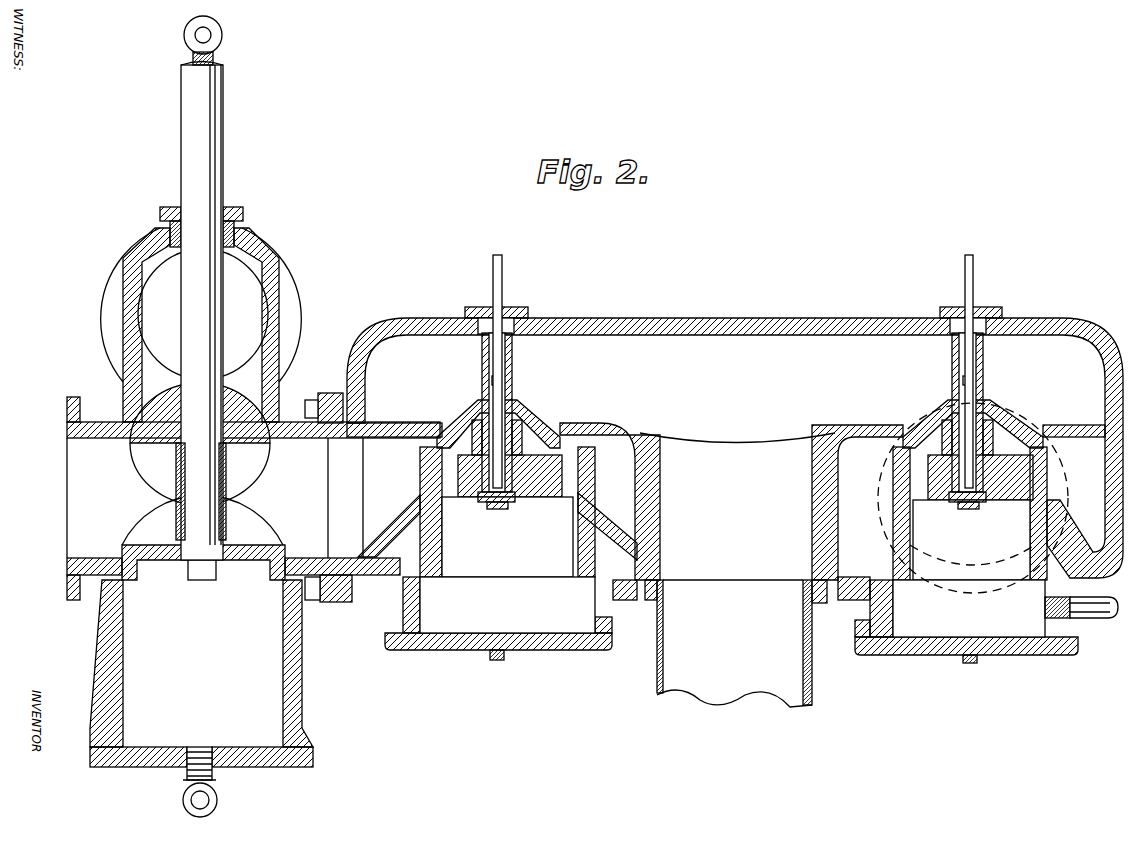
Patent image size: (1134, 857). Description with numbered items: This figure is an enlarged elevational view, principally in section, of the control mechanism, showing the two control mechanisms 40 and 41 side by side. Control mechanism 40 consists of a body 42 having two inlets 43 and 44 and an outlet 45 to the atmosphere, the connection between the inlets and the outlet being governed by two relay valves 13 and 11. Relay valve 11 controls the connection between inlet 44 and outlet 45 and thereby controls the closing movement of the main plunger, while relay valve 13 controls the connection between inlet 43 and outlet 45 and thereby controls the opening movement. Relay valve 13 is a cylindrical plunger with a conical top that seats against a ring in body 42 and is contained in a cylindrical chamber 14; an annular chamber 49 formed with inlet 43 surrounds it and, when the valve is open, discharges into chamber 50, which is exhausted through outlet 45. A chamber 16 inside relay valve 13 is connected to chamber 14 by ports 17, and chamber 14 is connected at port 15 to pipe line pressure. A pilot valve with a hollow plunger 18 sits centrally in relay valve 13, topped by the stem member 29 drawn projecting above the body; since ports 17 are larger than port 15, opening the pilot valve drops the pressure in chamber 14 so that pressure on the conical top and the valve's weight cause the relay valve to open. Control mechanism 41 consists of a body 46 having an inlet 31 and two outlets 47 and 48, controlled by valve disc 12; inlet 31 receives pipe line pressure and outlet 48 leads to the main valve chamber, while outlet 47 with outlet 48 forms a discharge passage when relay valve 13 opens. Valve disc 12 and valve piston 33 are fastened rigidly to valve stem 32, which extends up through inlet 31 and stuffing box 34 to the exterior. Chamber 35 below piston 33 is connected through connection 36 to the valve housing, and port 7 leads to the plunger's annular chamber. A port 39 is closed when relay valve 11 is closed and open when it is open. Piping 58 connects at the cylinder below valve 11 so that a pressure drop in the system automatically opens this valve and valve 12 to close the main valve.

The port 7 is at (945, 555).
The relay valve 11 is at (893, 488).
The valve disc 12 is at (158, 435).
The relay valve 13 is at (582, 478).
The cylindrical chamber 14 is at (470, 612).
The port 15 is at (502, 660).
The chamber 16 is at (462, 438).
The ports 17 is at (455, 475).
The hollow plunger 18 is at (513, 376).
The valve stem 29 is at (503, 282).
The inlet 31 is at (156, 298).
The valve stem 32 is at (217, 138).
The valve piston 33 is at (135, 548).
The stuffing box 34 is at (163, 207).
The chamber 35 is at (262, 680).
The connection 36 is at (217, 800).
The port 39 is at (1012, 408).
The control mechanism 40 is at (858, 274).
The control mechanism 41 is at (29, 319).
The body 42 is at (740, 318).
The inlet 43 is at (562, 417).
The inlet 44 is at (1030, 428).
The outlet 45 is at (727, 688).
The body 46 is at (125, 385).
The outlet 47 is at (315, 510).
The outlet 48 is at (65, 472).
The annular chamber 49 is at (617, 518).
The chamber 50 is at (668, 360).
The piping 58 is at (1095, 617).